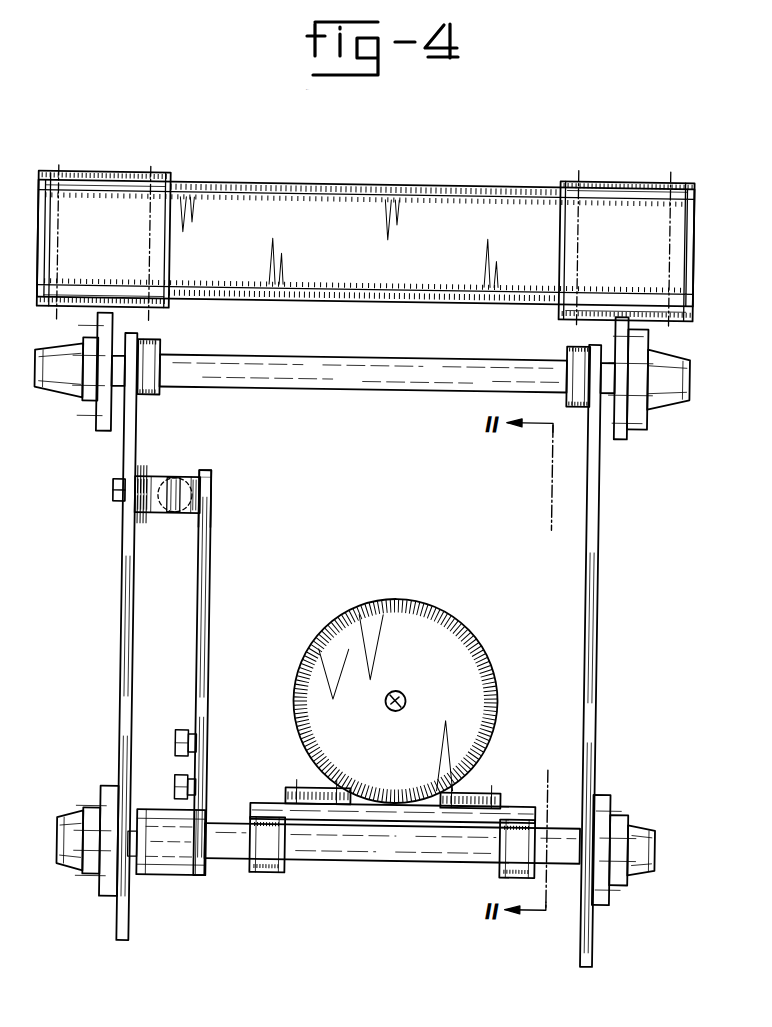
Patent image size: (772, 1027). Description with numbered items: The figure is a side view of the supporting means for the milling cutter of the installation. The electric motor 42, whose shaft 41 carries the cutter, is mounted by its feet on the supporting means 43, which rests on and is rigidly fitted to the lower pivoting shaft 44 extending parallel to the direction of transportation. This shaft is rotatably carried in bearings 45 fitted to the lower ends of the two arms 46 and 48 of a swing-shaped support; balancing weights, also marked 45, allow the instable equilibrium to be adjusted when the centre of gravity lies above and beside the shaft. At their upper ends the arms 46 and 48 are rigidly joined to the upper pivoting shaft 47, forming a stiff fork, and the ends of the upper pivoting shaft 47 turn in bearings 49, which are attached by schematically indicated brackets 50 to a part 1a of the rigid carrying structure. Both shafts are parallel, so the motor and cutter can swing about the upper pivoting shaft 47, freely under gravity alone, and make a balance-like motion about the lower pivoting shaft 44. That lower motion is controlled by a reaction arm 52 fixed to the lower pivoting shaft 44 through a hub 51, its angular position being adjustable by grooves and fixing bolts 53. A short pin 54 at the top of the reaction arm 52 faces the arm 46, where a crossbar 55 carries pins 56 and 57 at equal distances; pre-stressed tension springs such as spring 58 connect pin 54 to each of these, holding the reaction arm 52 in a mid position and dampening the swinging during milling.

The part of the rigid carrying structure 1a is at (334, 184).
The shaft 41 is at (407, 698).
The electric motor 42 is at (463, 631).
The supporting means 43 is at (484, 814).
The pivoting shaft 44 is at (384, 845).
The bearings 45 is at (85, 890).
The arm 46 is at (123, 616).
The upper pivoting shaft 47 is at (353, 370).
The arm 48 is at (603, 595).
The bearings 49 is at (70, 405).
The brackets 50 is at (115, 332).
The hub 51 is at (190, 878).
The reaction arm 52 is at (211, 615).
The adjustment grooves and fixing bolts 53 is at (198, 773).
The short pin 54 is at (194, 480).
The crossbar 55 is at (139, 482).
The short pin 56 is at (149, 517).
The short pin 57 is at (119, 490).
The spring 58 is at (206, 530).